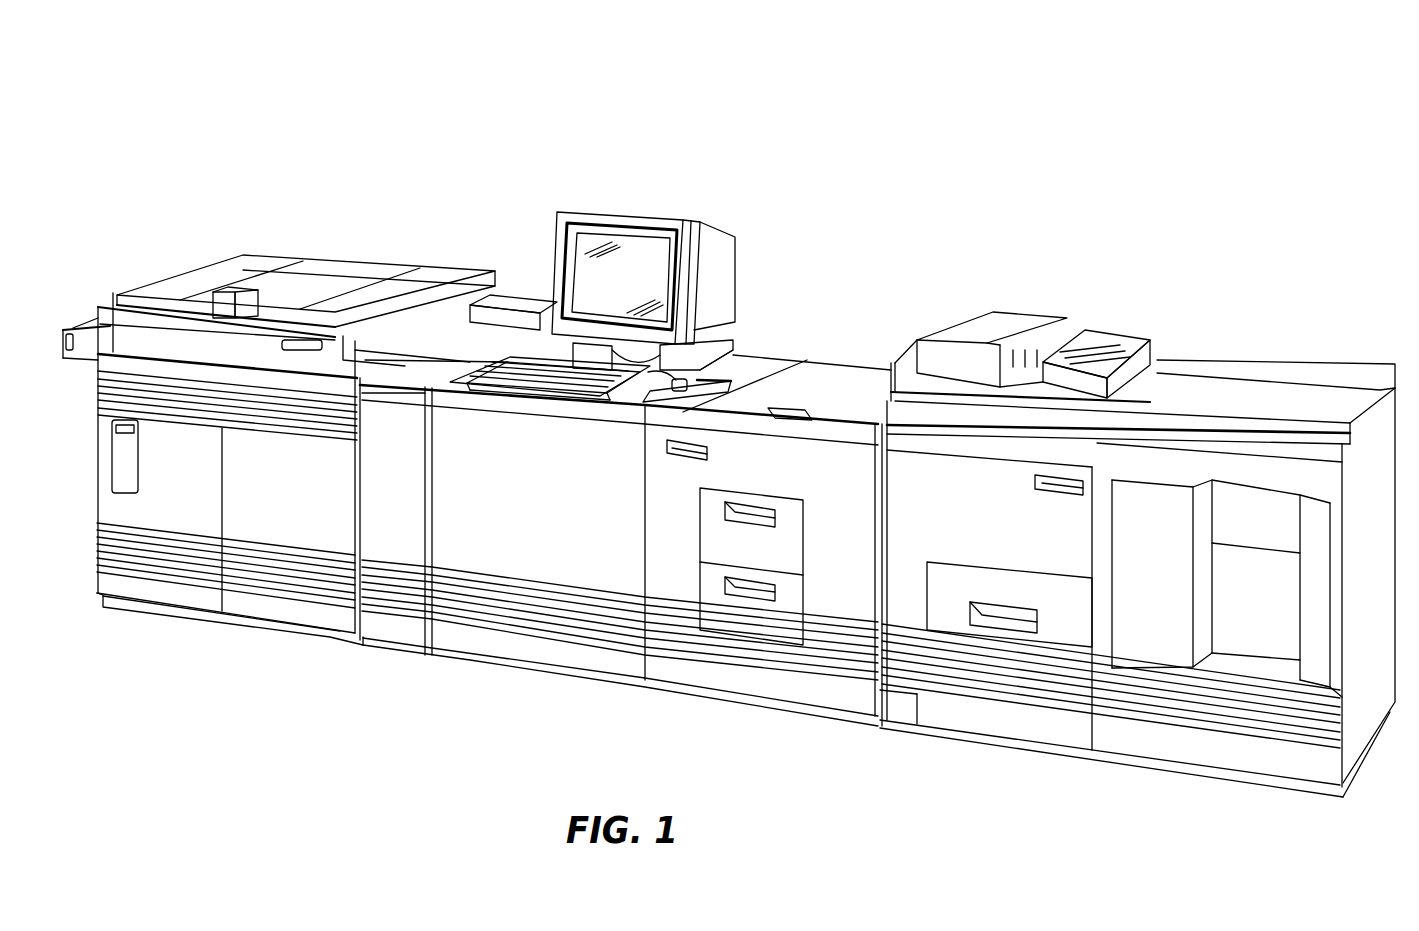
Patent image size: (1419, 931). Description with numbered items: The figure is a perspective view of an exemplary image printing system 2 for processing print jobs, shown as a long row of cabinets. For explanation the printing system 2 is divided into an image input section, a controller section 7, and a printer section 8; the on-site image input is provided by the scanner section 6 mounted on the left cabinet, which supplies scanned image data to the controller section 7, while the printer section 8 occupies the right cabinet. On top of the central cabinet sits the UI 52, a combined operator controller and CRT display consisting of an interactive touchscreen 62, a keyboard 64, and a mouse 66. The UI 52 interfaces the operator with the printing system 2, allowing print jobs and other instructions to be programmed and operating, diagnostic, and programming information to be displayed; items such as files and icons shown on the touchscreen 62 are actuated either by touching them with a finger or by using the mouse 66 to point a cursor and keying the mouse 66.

The image printing system 2 is at (880, 95).
The scanner section 6 is at (354, 228).
The controller section 7 is at (78, 499).
The printer section 8 is at (852, 274).
The UI 52 is at (655, 196).
The interactive touchscreen 62 is at (583, 282).
The keyboard 64 is at (538, 398).
The mouse 66 is at (645, 395).